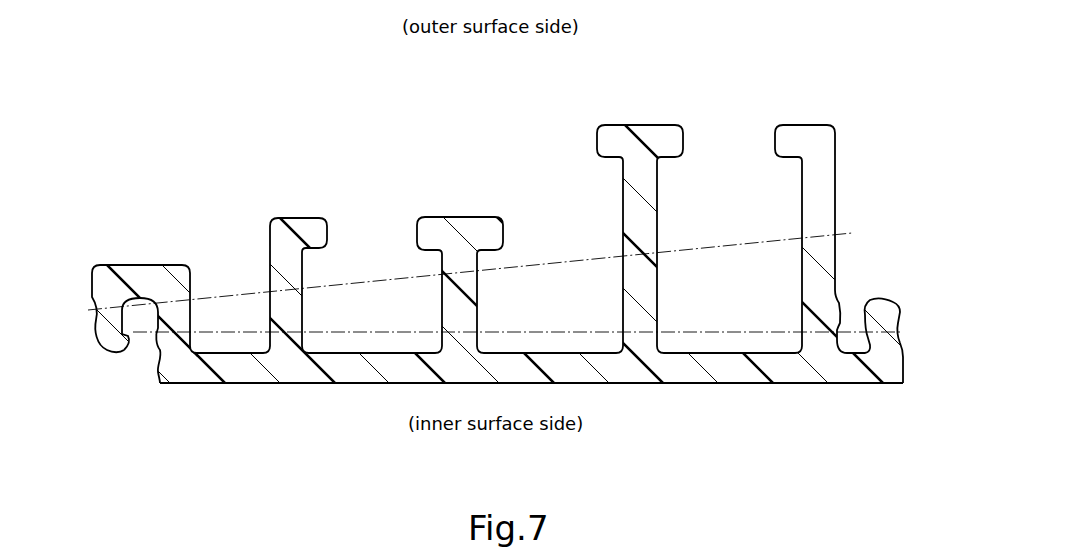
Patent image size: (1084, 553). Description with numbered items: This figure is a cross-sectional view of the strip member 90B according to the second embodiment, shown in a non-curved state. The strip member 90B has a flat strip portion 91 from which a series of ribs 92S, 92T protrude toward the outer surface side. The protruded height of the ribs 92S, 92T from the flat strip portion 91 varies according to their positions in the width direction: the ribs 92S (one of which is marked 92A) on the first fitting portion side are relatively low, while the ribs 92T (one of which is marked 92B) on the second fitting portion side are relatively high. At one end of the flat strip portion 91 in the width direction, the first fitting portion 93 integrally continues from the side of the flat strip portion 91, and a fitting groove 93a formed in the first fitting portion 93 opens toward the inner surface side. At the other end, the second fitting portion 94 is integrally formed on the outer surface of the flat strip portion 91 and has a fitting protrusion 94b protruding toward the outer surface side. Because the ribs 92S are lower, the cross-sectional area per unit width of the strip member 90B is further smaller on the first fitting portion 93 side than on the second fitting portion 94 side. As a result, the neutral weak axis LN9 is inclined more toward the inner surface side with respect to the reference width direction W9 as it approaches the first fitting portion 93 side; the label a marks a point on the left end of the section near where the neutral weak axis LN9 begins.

The strip member 90B is at (173, 148).
The flat strip portion 91 is at (348, 385).
The ribs 92S is at (457, 217).
The first protrusion 92A is at (292, 218).
The ribs 92T is at (657, 125).
The second protrusion 92B is at (835, 157).
The first fitting portion 93 is at (130, 265).
The fitting groove 93a is at (137, 340).
The second fitting portion 94 is at (907, 307).
The fitting protrusion 94b is at (880, 298).
The neutral weak axis LN9 is at (585, 258).
The reference width direction W9 is at (562, 330).
The arrow direction a is at (87, 308).